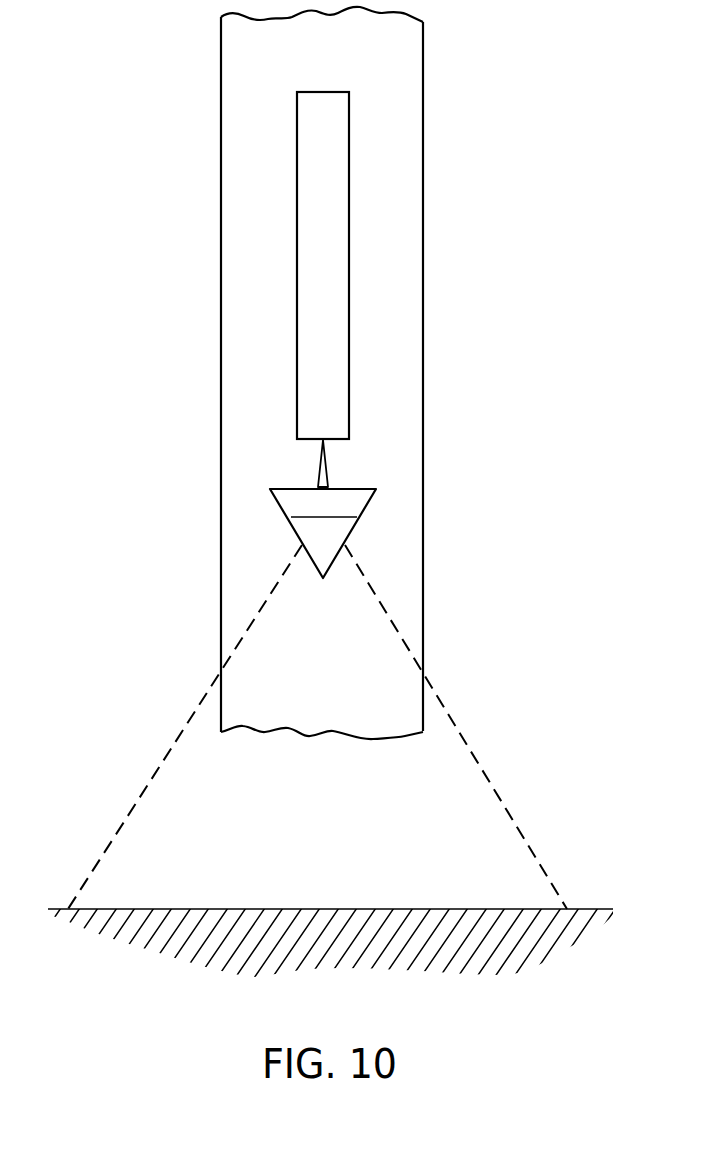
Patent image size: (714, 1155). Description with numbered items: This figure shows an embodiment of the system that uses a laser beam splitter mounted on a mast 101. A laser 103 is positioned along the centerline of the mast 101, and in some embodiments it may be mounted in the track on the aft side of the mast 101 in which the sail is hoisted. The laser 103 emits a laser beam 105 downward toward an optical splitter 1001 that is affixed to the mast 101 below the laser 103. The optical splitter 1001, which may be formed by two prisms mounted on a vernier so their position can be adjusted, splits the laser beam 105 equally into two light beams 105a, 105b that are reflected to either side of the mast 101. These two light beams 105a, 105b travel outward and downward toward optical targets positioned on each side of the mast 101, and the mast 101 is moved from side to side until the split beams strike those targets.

The mast 101 is at (235, 236).
The laser 103 is at (335, 292).
The laser beam 105 is at (318, 472).
The optical splitter 1001 is at (323, 533).
The light beam 105a is at (165, 762).
The light beam 105b is at (497, 743).